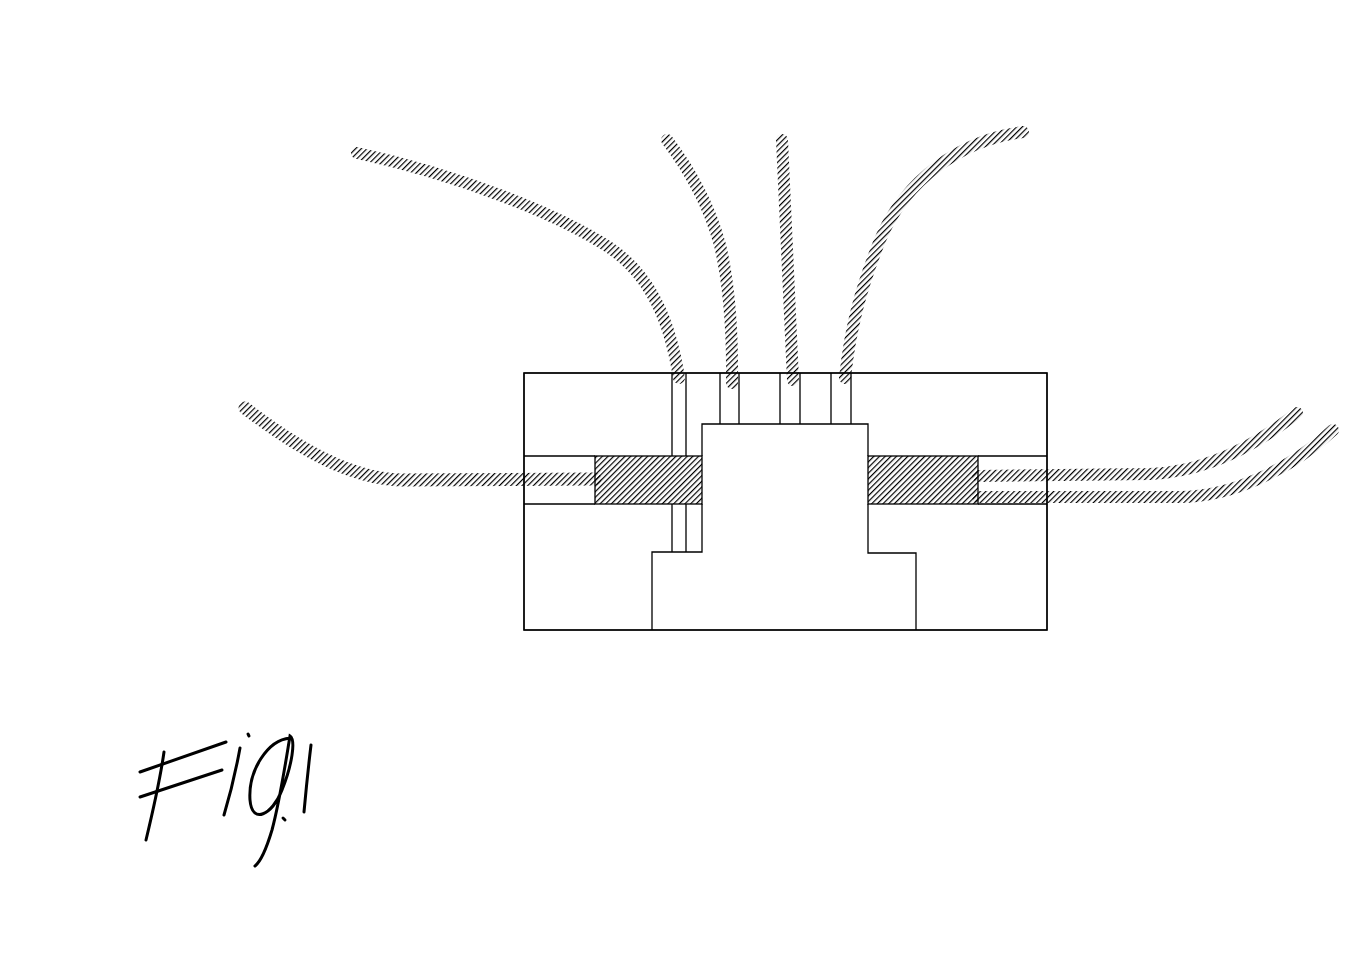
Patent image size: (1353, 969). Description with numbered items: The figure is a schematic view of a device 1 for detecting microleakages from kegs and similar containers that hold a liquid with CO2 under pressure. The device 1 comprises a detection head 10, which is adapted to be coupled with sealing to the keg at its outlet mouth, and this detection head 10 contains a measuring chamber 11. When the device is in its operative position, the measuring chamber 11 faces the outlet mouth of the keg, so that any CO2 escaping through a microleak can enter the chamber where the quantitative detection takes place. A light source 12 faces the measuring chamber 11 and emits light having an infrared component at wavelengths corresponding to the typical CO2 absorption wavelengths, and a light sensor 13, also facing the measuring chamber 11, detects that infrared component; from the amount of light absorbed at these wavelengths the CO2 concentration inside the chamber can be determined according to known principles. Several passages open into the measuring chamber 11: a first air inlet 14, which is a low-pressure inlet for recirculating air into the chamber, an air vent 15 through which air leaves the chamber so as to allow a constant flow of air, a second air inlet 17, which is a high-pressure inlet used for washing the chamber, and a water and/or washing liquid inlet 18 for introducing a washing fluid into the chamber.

The device for detecting microleakages 1 is at (1218, 133).
The detection head 10 is at (1033, 390).
The measuring chamber 11 is at (828, 565).
The light source 12 is at (620, 504).
The light sensor 13 is at (980, 467).
The first air inlet 14 is at (680, 410).
The air vent 15 is at (790, 390).
The second air inlet 17 is at (845, 395).
The washing liquid inlet 18 is at (730, 388).